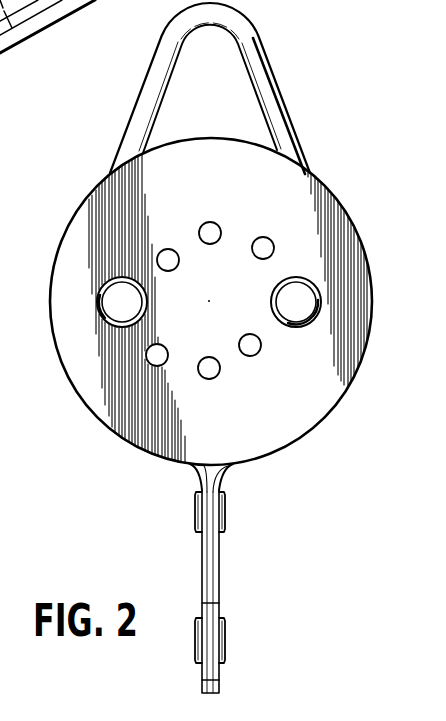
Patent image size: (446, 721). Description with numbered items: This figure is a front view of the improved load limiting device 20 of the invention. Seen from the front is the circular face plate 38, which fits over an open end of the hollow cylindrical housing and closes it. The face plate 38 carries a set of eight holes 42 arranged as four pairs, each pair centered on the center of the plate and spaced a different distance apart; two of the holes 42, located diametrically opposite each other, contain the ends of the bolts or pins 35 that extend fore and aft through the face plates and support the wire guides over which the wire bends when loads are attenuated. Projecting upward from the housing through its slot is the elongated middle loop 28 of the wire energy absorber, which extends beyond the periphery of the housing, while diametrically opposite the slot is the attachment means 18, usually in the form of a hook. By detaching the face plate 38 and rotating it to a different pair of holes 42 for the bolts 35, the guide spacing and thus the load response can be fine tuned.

The attachment means 18 is at (218, 620).
The load limiting device 20 is at (327, 180).
The middle loop 28 is at (246, 31).
The bolts or pins 35 is at (105, 302).
The face plate 38 is at (322, 398).
The holes 42 is at (258, 236).